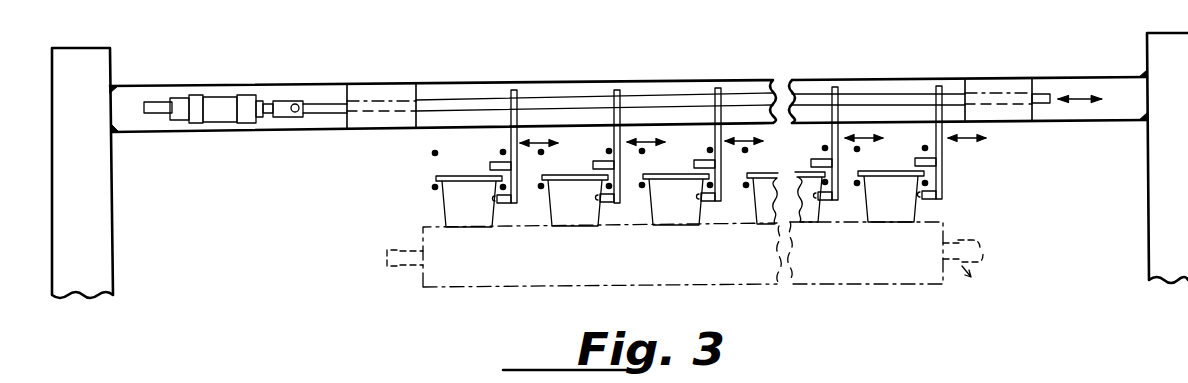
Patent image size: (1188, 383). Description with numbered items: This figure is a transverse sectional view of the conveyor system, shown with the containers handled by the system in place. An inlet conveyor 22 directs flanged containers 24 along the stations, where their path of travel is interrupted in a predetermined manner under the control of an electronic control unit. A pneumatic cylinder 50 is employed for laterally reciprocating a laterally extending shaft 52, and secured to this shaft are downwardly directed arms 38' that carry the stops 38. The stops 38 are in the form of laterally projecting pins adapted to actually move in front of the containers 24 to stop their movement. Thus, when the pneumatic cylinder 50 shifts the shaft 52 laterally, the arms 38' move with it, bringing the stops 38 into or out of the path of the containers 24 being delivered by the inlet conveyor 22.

The pneumatic cylinder 50 is at (220, 106).
The laterally extending shaft 52 is at (432, 103).
The downwardly directed arms 38' is at (726, 103).
The stops 38 is at (745, 215).
The flanged containers 24 is at (458, 204).
The inlet conveyor 22 is at (946, 226).